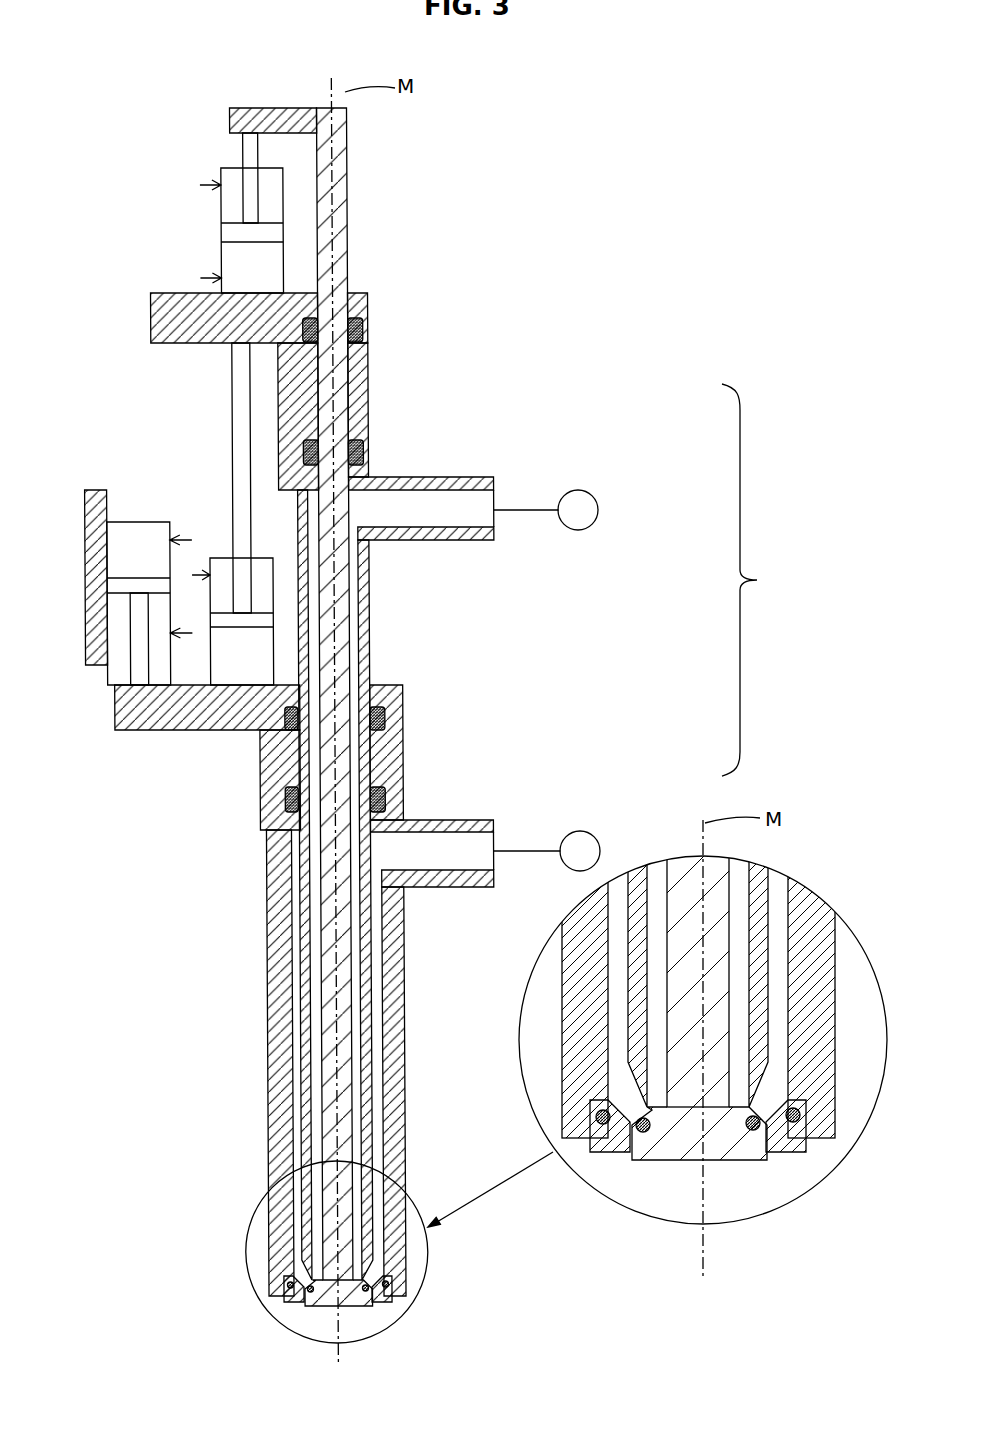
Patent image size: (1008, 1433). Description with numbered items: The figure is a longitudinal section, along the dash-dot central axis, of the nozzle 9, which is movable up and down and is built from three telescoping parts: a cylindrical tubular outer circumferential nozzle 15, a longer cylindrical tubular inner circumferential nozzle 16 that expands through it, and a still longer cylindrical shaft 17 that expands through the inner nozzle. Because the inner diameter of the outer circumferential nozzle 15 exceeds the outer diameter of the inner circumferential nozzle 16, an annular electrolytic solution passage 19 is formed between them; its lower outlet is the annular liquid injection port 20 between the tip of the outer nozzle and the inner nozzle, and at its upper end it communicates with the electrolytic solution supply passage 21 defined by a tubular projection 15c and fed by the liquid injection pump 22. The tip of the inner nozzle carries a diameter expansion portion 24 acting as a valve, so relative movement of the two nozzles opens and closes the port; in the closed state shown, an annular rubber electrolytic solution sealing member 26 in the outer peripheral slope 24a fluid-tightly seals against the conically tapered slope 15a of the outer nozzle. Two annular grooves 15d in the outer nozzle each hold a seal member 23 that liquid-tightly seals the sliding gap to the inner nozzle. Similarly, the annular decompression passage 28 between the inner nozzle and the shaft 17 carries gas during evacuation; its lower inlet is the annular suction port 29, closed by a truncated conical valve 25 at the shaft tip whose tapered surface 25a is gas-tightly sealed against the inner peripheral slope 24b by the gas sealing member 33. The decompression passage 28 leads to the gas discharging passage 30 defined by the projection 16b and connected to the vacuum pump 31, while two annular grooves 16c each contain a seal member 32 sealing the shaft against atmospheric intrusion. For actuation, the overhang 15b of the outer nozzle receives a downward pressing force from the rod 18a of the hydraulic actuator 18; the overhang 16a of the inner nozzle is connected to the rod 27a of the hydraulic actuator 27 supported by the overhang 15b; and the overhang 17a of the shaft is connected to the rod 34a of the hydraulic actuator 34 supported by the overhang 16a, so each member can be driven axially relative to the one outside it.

The nozzle 9 is at (750, 580).
The outer circumferential nozzle 15 is at (405, 756).
The slope 15a is at (812, 1160).
The overhang 15b is at (120, 722).
The projection 15c is at (490, 820).
The annular grooves 15d is at (398, 700).
The inner circumferential nozzle 16 is at (370, 618).
The overhang 16a is at (170, 330).
The projection 16b is at (490, 474).
The annular grooves 16c is at (360, 313).
The shaft 17 is at (348, 393).
The overhang 17a is at (245, 121).
The hydraulic actuator 18 is at (110, 520).
The rod 18a is at (133, 660).
The electrolytic solution passage 19 is at (280, 905).
The liquid injection port 20 is at (575, 1155).
The electrolytic solution supply passage 21 is at (435, 855).
The liquid injection pump 22 is at (592, 834).
The seal member 23 is at (285, 733).
The diameter expansion portion 24 is at (617, 1123).
The outer peripheral slope 24a is at (805, 1090).
The inner peripheral slope 24b is at (745, 1140).
The valve 25 is at (675, 1147).
The tapered surface 25a is at (765, 1140).
The electrolytic solution sealing member 26 is at (600, 1117).
The hydraulic actuator 27 is at (222, 558).
The rod 27a is at (240, 372).
The decompression passage 28 is at (357, 1000).
The suction port 29 is at (620, 1170).
The gas discharging passage 30 is at (433, 508).
The vacuum pump 31 is at (578, 530).
The seal member 32 is at (361, 328).
The gas sealing member 33 is at (643, 1140).
The hydraulic actuator 34 is at (221, 200).
The rod 34a is at (253, 150).